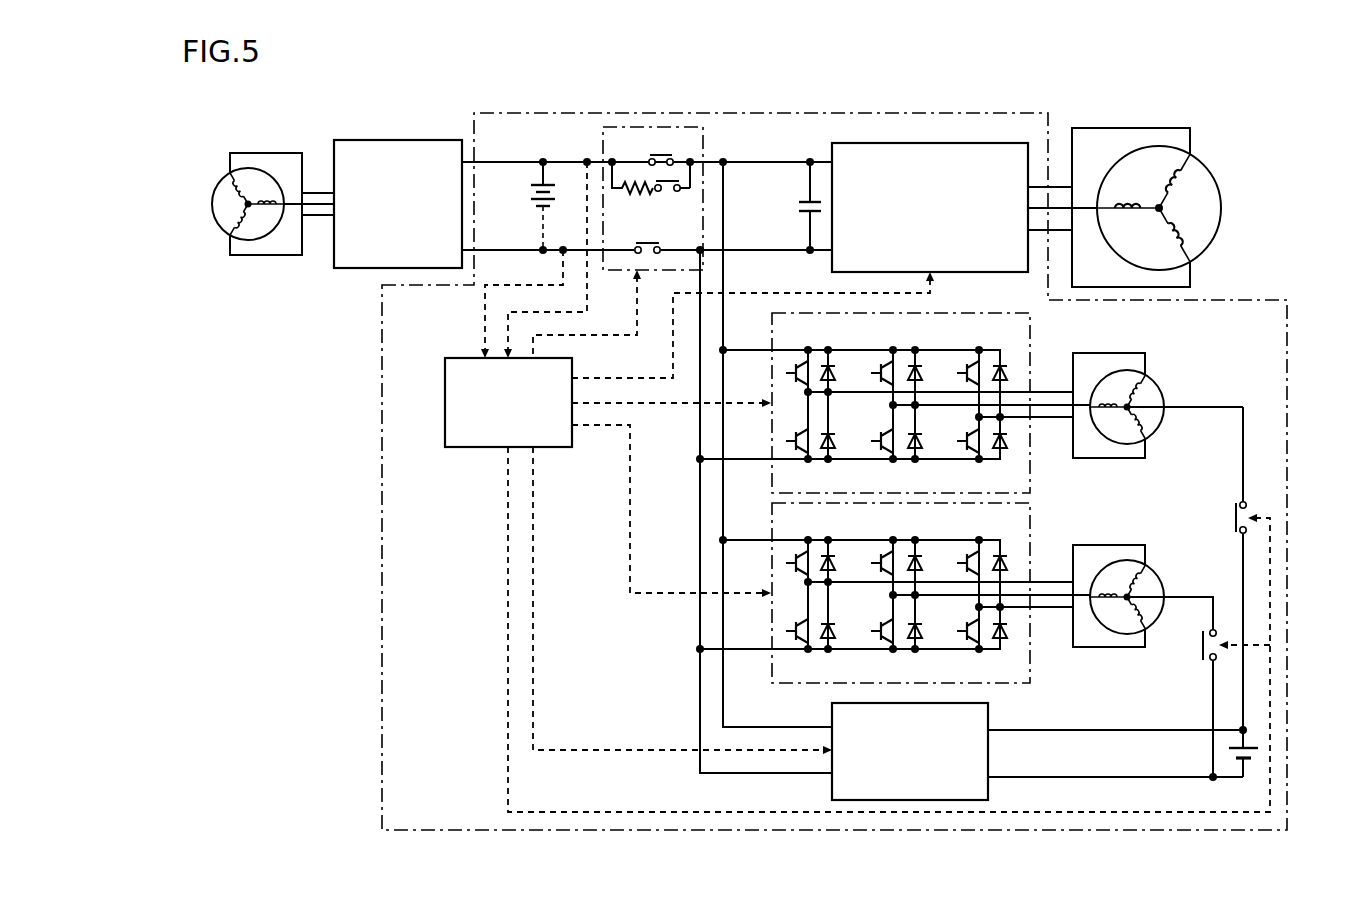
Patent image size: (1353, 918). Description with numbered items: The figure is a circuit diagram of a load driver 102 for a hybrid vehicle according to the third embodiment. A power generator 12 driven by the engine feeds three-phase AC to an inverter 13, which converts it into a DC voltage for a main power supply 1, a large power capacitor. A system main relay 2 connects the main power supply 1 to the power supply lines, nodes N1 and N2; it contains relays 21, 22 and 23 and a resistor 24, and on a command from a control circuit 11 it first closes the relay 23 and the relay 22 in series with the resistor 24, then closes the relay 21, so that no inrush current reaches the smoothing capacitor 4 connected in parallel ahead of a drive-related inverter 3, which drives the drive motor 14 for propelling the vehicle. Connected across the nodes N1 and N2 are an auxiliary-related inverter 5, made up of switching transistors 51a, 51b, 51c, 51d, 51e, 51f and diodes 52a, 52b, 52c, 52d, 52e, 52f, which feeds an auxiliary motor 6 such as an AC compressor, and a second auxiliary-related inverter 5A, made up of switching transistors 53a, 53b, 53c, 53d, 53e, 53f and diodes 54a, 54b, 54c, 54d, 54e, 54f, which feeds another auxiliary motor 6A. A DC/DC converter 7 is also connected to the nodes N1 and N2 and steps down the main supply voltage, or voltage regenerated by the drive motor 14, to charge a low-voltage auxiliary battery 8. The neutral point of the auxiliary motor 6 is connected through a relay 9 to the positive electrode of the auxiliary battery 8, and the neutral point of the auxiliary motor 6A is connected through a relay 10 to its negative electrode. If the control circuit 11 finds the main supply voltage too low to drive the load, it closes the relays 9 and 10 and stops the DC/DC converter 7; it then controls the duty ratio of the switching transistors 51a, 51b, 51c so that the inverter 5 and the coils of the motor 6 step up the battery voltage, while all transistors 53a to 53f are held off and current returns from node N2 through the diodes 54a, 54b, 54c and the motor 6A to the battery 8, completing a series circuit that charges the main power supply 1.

The main power supply 1 is at (536, 196).
The system main relay 2 is at (671, 213).
The drive-related inverter 3 is at (985, 143).
The capacitor 4 is at (799, 206).
The auxiliary-related inverter 5 is at (895, 403).
The auxiliary-related inverter 5A is at (895, 593).
The auxiliary motor 6 is at (1150, 382).
The auxiliary motor 6A is at (1150, 578).
The DC/DC converter 7 is at (1003, 752).
The auxiliary battery 8 is at (1228, 751).
The relay 9 is at (1233, 521).
The relay 10 is at (1200, 647).
The control circuit 11 is at (445, 406).
The power generator 12 is at (247, 168).
The inverter 13 is at (398, 140).
The drive motor 14 is at (1222, 208).
The relay 21 is at (660, 154).
The relay 22 is at (668, 196).
The relay 23 is at (646, 258).
The resistor 24 is at (637, 196).
The switching transistor 51a is at (786, 455).
The switching transistor 51b is at (872, 455).
The switching transistor 51c is at (958, 455).
The switching transistor 51d is at (787, 360).
The switching transistor 51e is at (873, 360).
The switching transistor 51f is at (959, 360).
The diode 52a is at (833, 455).
The diode 52b is at (919, 455).
The diode 52c is at (1005, 455).
The diode 52d is at (833, 360).
The diode 52e is at (920, 360).
The diode 52f is at (1005, 360).
The switching transistor 53a is at (786, 645).
The switching transistor 53b is at (872, 645).
The switching transistor 53c is at (958, 645).
The switching transistor 53d is at (787, 550).
The switching transistor 53e is at (873, 550).
The switching transistor 53f is at (959, 550).
The diode 54a is at (833, 645).
The diode 54b is at (919, 645).
The diode 54c is at (1005, 645).
The diode 54d is at (833, 550).
The diode 54e is at (920, 550).
The diode 54f is at (1005, 550).
The load driver 102 is at (379, 297).
The node N1 is at (723, 267).
The node N2 is at (700, 438).